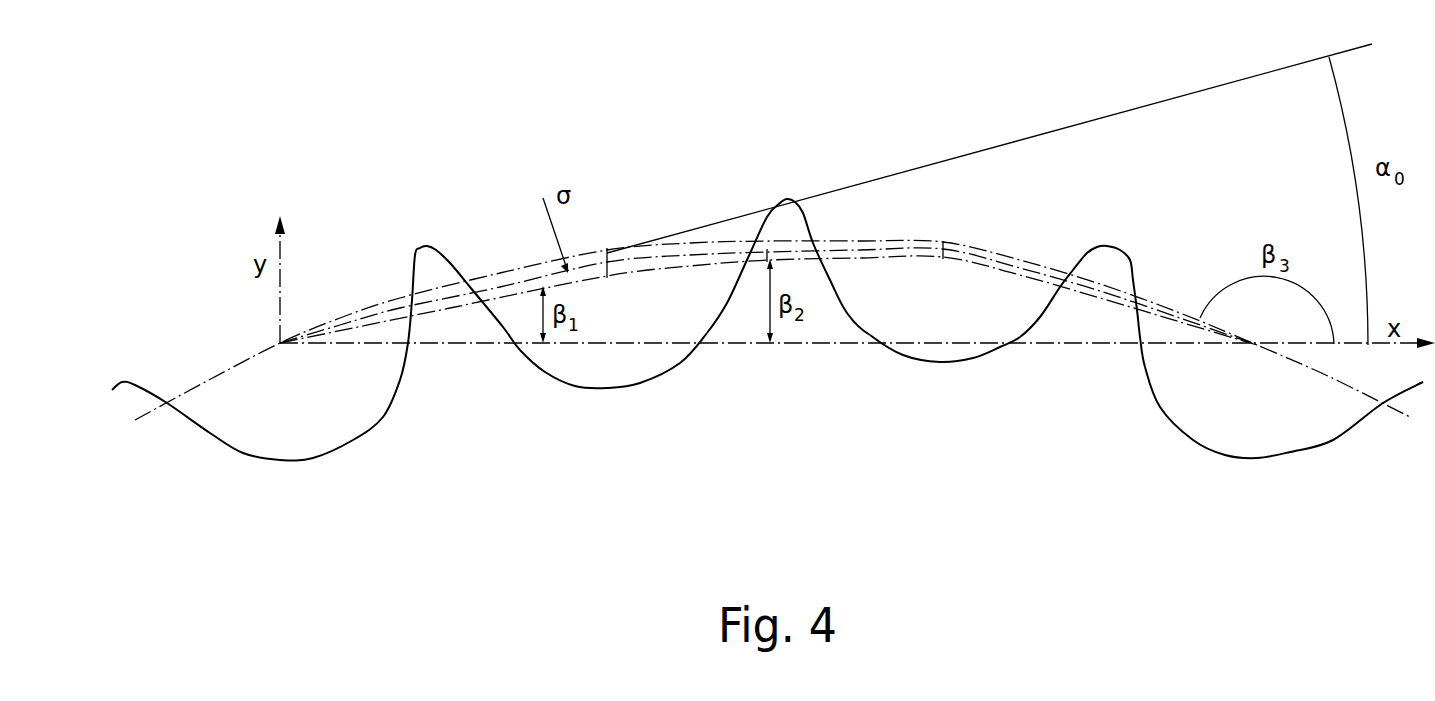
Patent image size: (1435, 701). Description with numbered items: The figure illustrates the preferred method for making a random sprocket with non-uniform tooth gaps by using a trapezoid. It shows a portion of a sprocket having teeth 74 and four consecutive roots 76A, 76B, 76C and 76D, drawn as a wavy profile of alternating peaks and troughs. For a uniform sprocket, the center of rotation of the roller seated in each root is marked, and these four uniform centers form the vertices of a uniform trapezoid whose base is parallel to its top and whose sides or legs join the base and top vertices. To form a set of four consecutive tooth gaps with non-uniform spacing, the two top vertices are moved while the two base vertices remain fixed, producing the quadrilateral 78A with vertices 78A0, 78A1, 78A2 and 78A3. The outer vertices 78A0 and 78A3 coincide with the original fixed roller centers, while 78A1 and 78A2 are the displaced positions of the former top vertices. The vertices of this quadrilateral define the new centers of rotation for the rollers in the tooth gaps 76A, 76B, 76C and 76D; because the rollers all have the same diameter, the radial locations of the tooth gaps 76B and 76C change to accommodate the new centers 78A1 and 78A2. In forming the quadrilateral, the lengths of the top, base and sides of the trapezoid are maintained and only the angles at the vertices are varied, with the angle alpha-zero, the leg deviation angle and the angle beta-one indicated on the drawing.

The teeth 74 is at (428, 247).
The root 76A is at (300, 463).
The root 76B is at (550, 373).
The root 76C is at (940, 365).
The root 76D is at (1177, 427).
The quadrilateral 78A is at (608, 255).
The vertex 78A0 is at (282, 345).
The vertex 78A1 is at (613, 270).
The vertex 78A2 is at (1042, 383).
The vertex 78A3 is at (1257, 345).